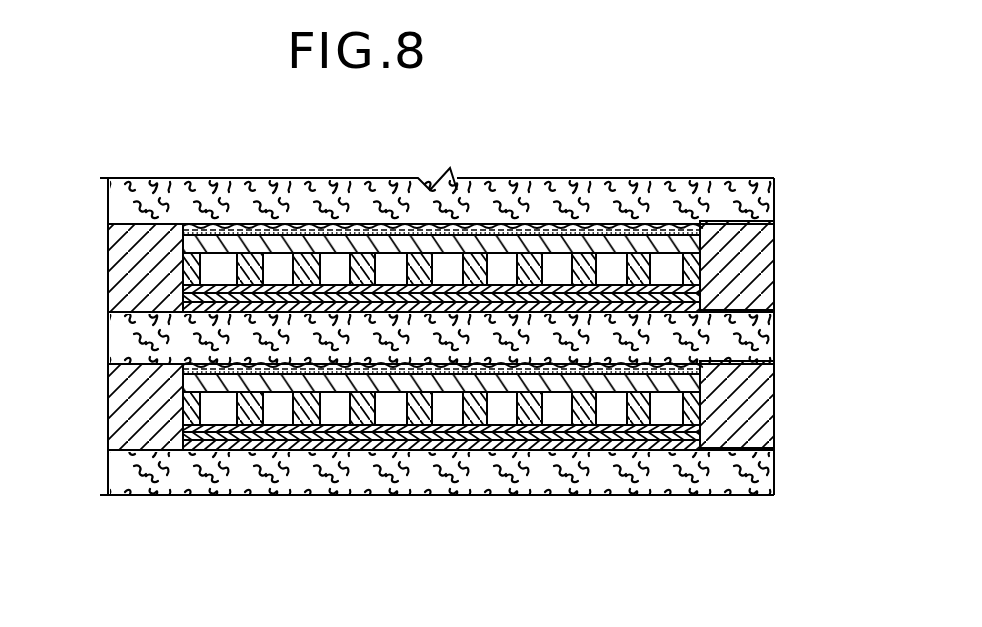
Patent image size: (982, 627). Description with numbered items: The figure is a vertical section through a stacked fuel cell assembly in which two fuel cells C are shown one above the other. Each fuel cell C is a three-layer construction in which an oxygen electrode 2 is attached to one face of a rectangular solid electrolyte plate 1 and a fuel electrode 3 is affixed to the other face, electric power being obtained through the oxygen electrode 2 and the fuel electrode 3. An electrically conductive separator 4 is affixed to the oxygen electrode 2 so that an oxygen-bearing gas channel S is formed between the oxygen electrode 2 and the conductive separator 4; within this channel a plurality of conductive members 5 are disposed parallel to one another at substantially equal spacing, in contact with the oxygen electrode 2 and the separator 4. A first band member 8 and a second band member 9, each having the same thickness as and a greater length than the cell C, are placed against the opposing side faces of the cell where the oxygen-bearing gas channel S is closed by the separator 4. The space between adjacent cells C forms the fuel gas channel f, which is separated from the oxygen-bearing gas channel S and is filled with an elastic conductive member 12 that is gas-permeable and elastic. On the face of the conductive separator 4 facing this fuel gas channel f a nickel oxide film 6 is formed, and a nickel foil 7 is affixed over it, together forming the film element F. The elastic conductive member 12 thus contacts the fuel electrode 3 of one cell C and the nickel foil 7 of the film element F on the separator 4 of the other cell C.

The solid electrolyte plate 1 is at (770, 288).
The oxygen electrode 2 is at (667, 280).
The fuel electrode 3 is at (687, 310).
The conductive separator 4 is at (197, 232).
The conductive member 5 is at (255, 243).
The nickel oxide film 6 is at (502, 232).
The nickel foil 7 is at (453, 223).
The first band member 8 is at (108, 283).
The second band member 9 is at (770, 240).
The elastic conductive member 12 is at (593, 187).
The oxygen-bearing gas channel S is at (335, 268).
The film element F is at (462, 146).
The fuel gas channel f is at (690, 190).
The fuel cell C is at (182, 268).